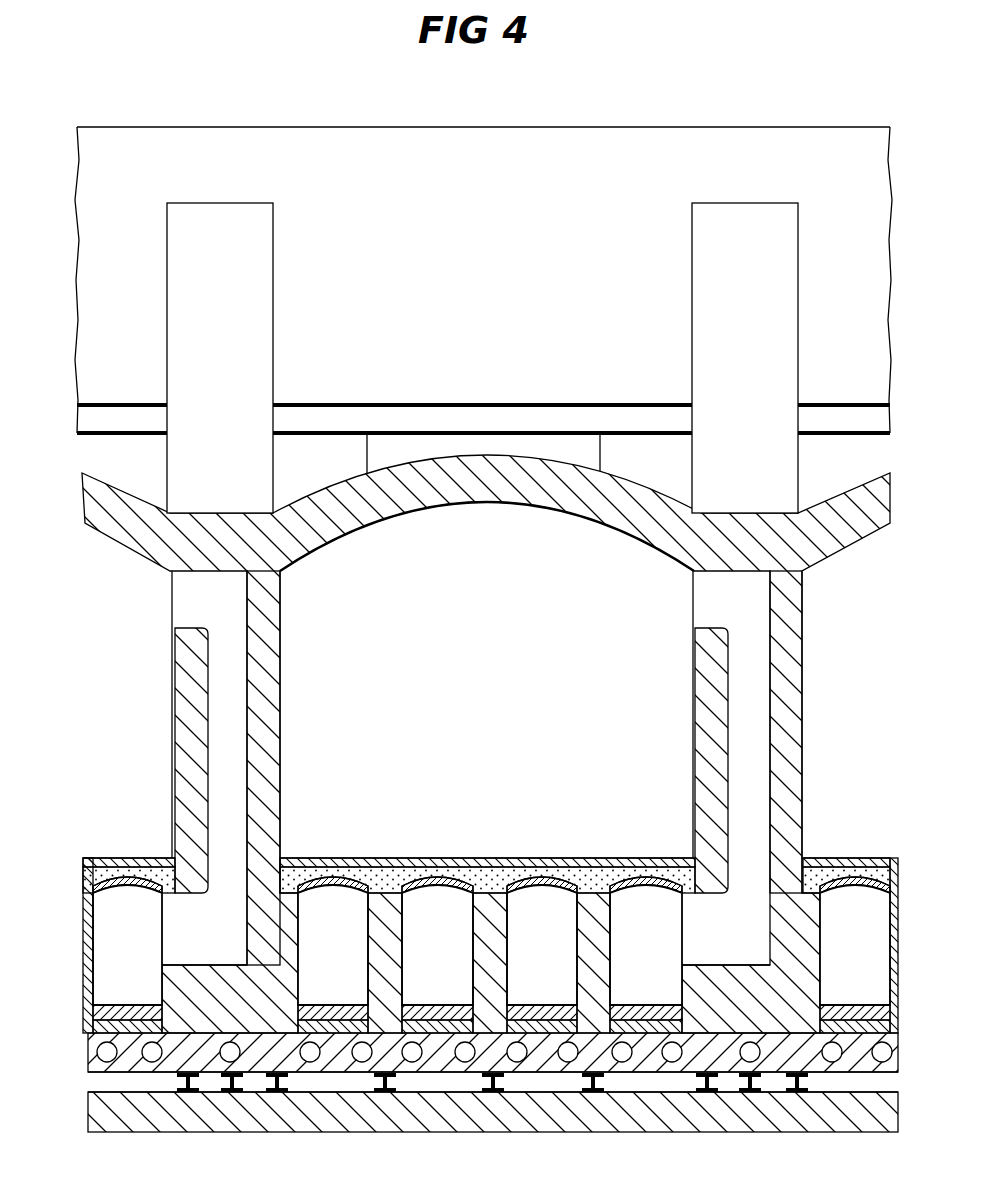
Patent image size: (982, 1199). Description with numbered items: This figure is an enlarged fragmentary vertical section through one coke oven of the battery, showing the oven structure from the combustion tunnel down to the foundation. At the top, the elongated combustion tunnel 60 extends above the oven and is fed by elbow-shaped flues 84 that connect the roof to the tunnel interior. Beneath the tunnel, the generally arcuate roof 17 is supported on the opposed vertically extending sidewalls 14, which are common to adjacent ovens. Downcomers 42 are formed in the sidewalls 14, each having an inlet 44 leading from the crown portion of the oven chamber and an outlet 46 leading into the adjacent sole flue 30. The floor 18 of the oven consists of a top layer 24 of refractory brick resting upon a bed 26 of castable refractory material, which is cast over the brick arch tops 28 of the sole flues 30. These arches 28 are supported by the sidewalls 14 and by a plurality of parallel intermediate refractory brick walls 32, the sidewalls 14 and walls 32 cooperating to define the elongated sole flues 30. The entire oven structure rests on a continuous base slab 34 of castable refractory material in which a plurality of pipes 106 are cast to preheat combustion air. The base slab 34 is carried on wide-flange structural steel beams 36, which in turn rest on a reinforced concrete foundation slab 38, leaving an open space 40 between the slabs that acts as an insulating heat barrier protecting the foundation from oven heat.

The combustion tunnel 60 is at (490, 229).
The elbow-shaped flue 84 is at (262, 275).
The roof 17 is at (393, 500).
The sidewall 14 is at (280, 660).
The inlet 44 is at (175, 610).
The downcomer 42 is at (225, 718).
The floor 18 is at (404, 858).
The top layer 24 is at (462, 868).
The bed 26 is at (498, 872).
The arch top 28 is at (572, 882).
The sole flue 30 is at (139, 985).
The intermediate refractory brick wall 32 is at (372, 910).
The outlet 46 is at (175, 910).
The base slab 34 is at (508, 1063).
The pipe 106 is at (345, 1062).
The space 40 is at (565, 1085).
The wide-flange structural steel beam 36 is at (240, 1080).
The foundation slab 38 is at (390, 1120).